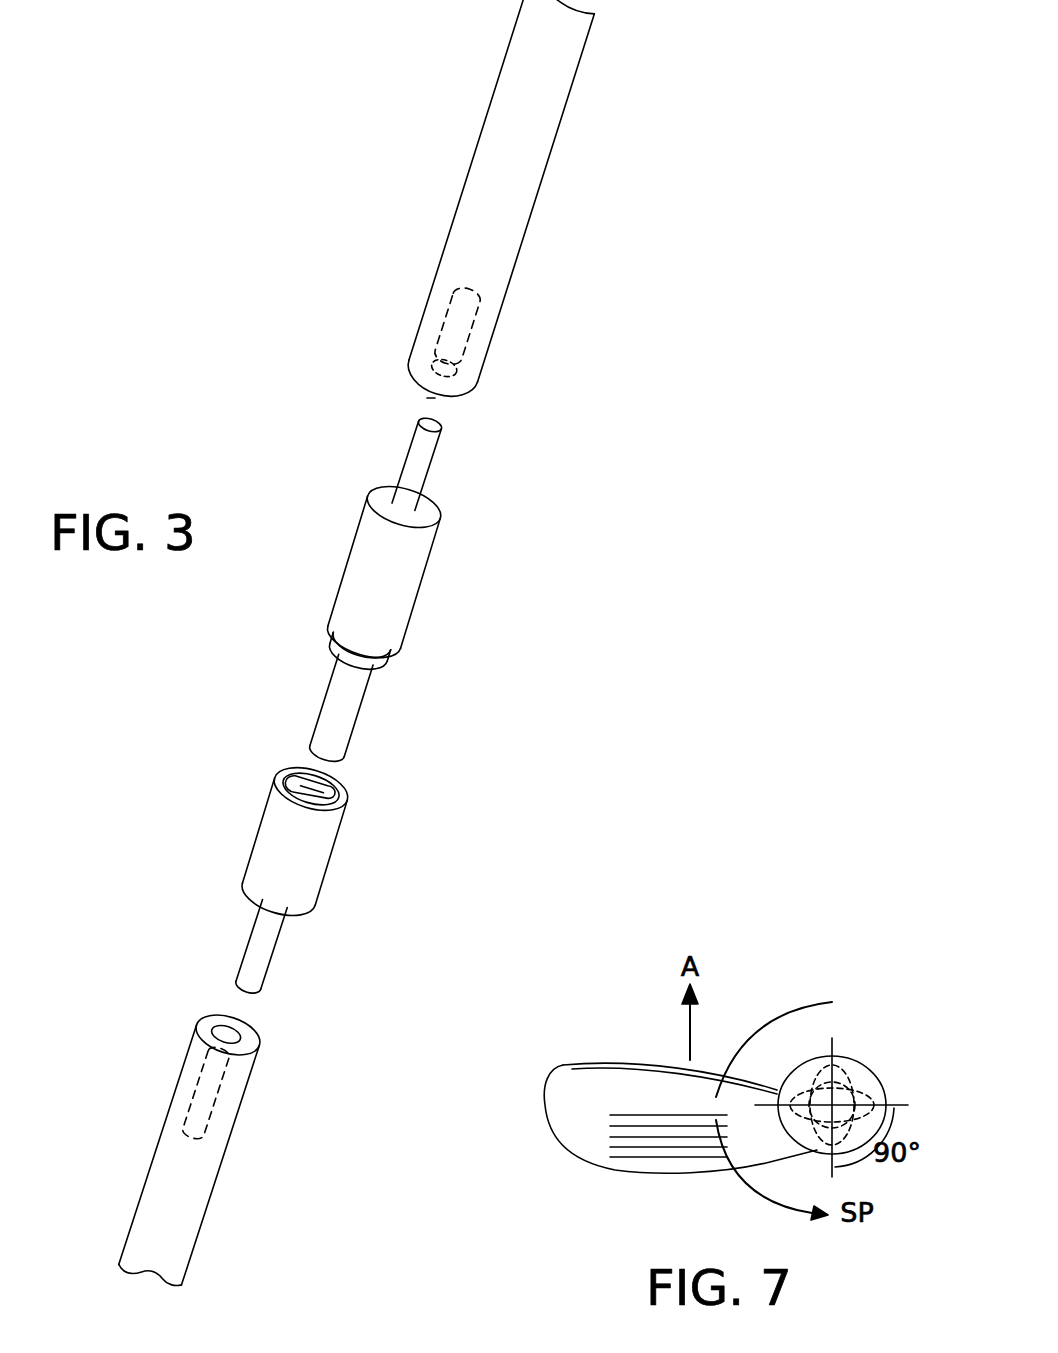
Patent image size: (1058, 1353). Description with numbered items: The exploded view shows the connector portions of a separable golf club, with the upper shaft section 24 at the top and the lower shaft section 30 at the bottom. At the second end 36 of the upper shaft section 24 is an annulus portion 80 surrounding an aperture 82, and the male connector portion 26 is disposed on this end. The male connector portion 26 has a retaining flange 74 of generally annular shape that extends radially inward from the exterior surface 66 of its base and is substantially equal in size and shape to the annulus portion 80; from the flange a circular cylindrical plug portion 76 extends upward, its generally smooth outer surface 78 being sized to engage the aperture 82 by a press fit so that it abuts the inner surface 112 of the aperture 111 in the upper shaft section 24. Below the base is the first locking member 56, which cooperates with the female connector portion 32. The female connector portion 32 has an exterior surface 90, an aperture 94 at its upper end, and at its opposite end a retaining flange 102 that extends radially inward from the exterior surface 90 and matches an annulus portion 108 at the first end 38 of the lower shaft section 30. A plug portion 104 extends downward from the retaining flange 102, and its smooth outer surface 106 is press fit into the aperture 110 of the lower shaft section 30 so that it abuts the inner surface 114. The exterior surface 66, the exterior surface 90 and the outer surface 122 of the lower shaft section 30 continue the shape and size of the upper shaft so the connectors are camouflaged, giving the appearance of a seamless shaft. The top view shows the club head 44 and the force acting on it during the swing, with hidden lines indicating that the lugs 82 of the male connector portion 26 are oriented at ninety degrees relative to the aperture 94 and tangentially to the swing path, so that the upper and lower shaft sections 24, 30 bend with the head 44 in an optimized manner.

In FIG. 3, the upper shaft section 24 is at (632, 170).
In FIG. 3, the second end 36 is at (505, 283).
In FIG. 3, the annulus portion 80 is at (468, 393).
In FIG. 3, the aperture 82 is at (452, 302).
In FIG. 7, the aperture 82 is at (843, 1077).
In FIG. 3, the inner surface 112 is at (468, 340).
In FIG. 3, the aperture 111 is at (427, 398).
In FIG. 3, the plug portion 76 is at (442, 424).
In FIG. 3, the outer surface 78 is at (435, 452).
In FIG. 3, the male connector portion 26 is at (484, 602).
In FIG. 3, the exterior surface 66 is at (372, 527).
In FIG. 3, the retaining flange 74 is at (437, 502).
In FIG. 3, the first locking member 56 is at (382, 665).
In FIG. 3, the female connector portion 32 is at (386, 870).
In FIG. 3, the exterior surface 90 is at (338, 822).
In FIG. 3, the aperture 94 is at (297, 773).
In FIG. 7, the aperture 94 is at (863, 1093).
In FIG. 3, the retaining flange 102 is at (302, 907).
In FIG. 3, the outer surface 106 is at (273, 950).
In FIG. 3, the plug portion 104 is at (237, 988).
In FIG. 3, the lower shaft section 30 is at (242, 1158).
In FIG. 3, the annulus portion 108 is at (252, 1020).
In FIG. 3, the aperture 110 is at (227, 1017).
In FIG. 3, the inner surface 114 is at (262, 1038).
In FIG. 3, the first end 38 is at (236, 1090).
In FIG. 3, the outer surface 122 is at (152, 1210).
In FIG. 7, the club head 44 is at (563, 1089).